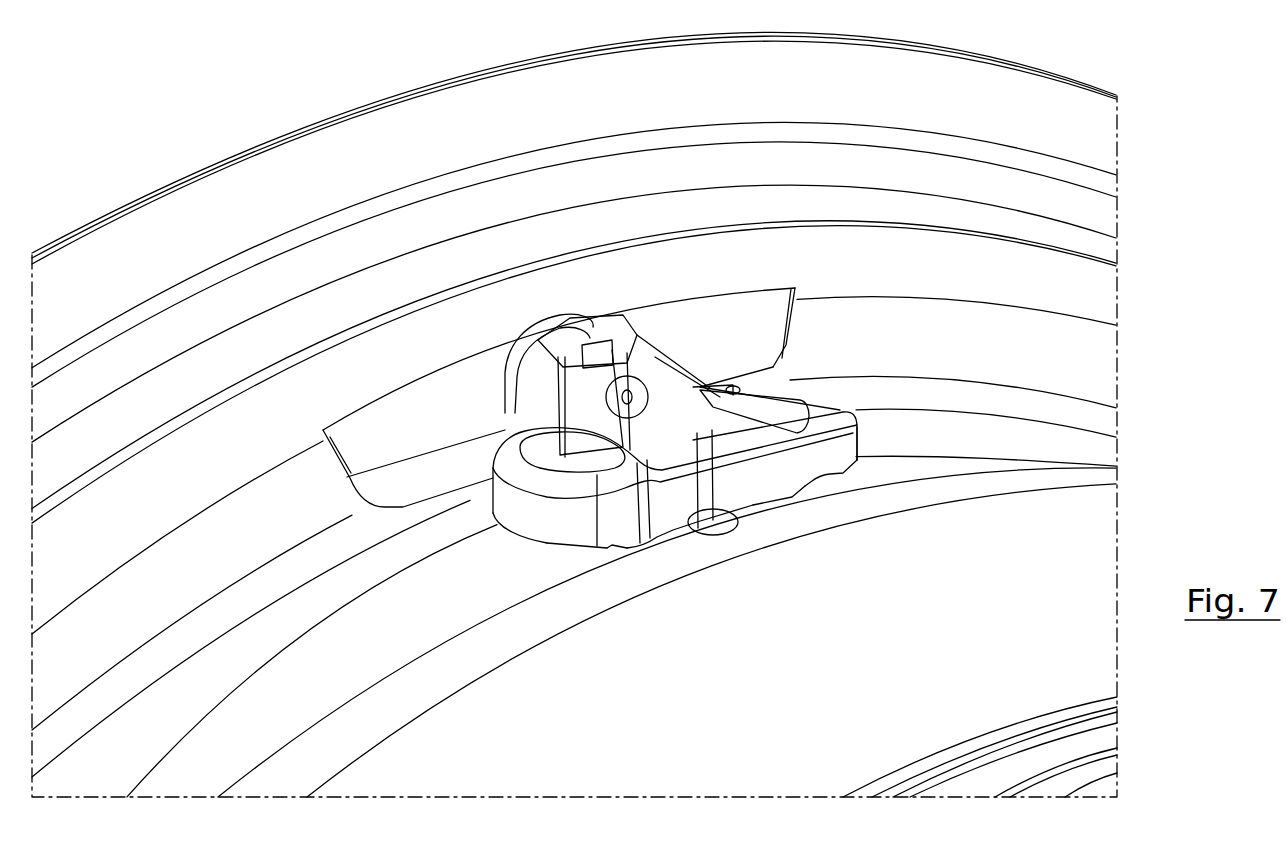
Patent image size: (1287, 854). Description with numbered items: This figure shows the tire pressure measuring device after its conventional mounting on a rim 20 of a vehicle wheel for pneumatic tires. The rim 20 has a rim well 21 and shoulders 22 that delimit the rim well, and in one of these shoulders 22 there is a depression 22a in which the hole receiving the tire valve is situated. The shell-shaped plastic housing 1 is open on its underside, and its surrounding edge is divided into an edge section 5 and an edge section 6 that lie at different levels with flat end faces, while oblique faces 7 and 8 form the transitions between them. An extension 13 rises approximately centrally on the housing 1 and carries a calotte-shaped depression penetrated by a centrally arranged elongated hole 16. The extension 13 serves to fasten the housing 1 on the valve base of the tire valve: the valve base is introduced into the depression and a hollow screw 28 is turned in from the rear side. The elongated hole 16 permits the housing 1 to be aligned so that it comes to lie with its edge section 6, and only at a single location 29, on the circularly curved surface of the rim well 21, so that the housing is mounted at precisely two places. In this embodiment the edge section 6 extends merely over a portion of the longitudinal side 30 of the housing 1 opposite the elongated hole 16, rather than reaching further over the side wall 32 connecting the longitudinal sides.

The housing 1 is at (676, 397).
The edge section 5 is at (562, 543).
The edge section 6 is at (792, 497).
The oblique face 7 is at (812, 482).
The oblique face 8 is at (607, 548).
The extension 13 is at (672, 260).
The elongated hole 16 is at (596, 356).
The rim 20 is at (257, 172).
The rim well 21 is at (355, 623).
The shoulder 22 is at (1020, 352).
The depression 22a is at (794, 290).
The hollow screw 28 is at (612, 389).
The location 29 is at (715, 540).
The longitudinal side 30 is at (847, 450).
The side wall 32 is at (520, 522).